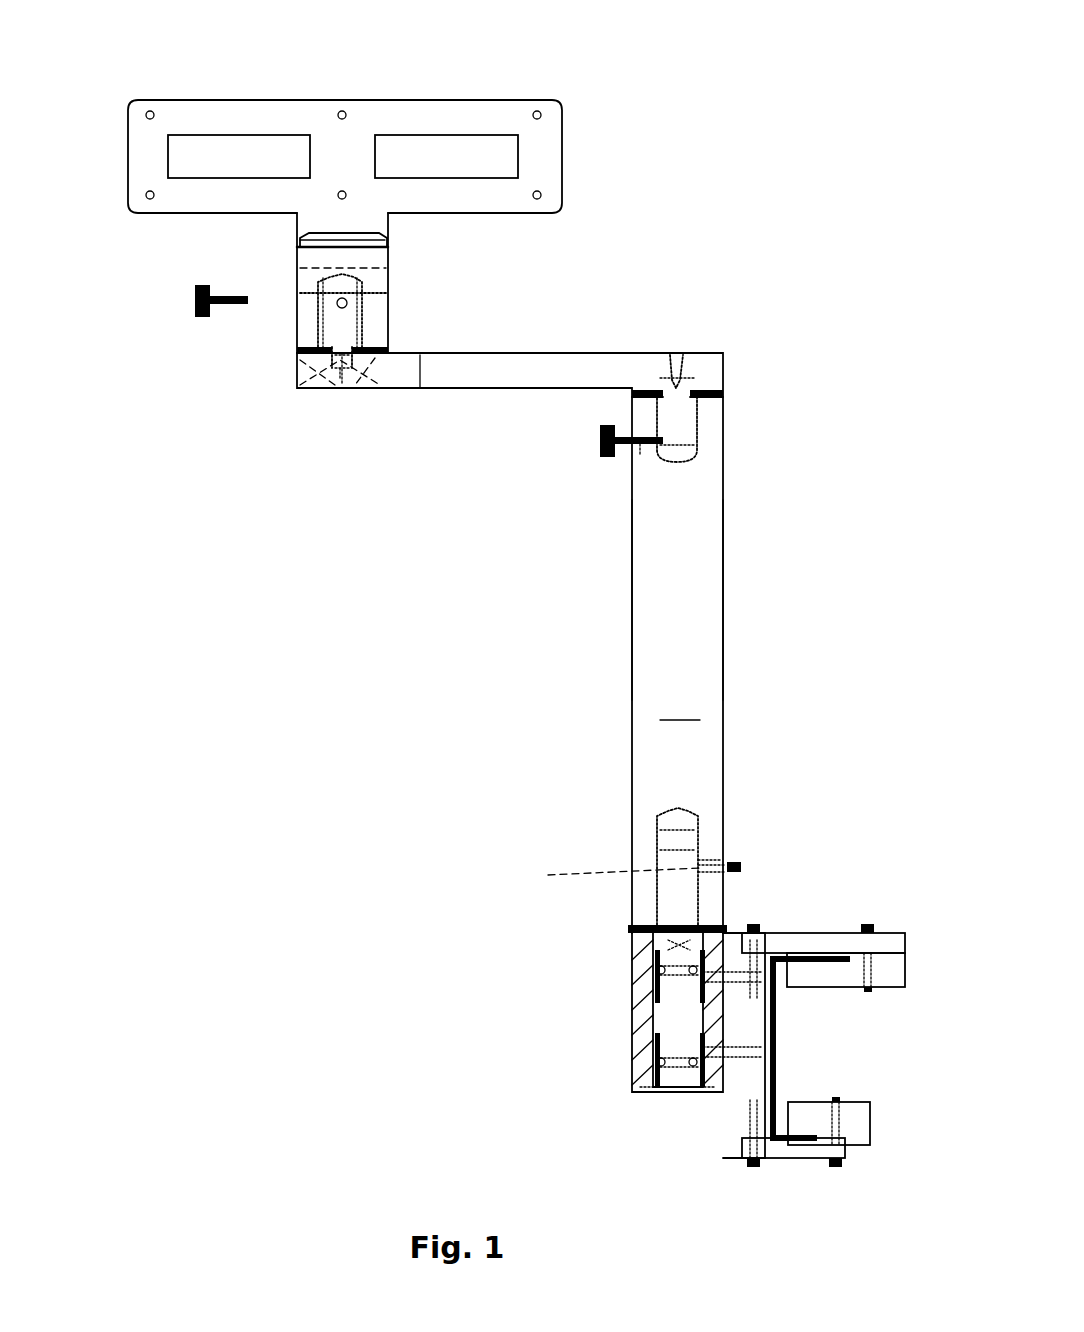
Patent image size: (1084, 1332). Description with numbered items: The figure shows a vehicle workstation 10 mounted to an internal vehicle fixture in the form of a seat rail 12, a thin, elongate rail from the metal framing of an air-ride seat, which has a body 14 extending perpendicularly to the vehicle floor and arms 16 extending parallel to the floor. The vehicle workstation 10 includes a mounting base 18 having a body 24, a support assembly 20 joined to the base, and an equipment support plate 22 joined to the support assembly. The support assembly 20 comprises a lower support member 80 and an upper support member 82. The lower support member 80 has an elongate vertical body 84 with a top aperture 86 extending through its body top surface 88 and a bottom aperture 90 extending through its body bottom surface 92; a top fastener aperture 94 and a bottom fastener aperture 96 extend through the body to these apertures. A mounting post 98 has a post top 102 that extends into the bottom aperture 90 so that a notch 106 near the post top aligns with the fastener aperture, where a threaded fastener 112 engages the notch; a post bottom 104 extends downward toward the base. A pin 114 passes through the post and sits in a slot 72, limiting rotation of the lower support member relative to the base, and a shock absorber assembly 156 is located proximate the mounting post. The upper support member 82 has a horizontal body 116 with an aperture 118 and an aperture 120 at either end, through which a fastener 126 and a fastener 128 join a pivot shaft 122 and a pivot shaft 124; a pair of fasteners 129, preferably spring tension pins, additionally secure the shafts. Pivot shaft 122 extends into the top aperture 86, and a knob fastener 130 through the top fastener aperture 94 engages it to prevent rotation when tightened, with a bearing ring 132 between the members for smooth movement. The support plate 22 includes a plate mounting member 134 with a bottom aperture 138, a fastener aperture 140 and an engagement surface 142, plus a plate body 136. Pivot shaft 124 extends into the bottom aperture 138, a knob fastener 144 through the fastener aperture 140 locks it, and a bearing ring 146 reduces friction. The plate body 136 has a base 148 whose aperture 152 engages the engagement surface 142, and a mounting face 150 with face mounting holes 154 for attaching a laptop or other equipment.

The vehicle workstation 10 is at (782, 86).
The seat rail 12 is at (778, 1030).
The body 14 is at (776, 1078).
The arms 16 is at (828, 950).
The mounting base 18 is at (631, 1057).
The support assembly 20 is at (632, 587).
The equipment support plate 22 is at (390, 257).
The body 24 is at (740, 1110).
The slot 72 is at (652, 950).
The lower support member 80 is at (722, 603).
The upper support member 82 is at (492, 355).
The body 84 is at (683, 720).
The top aperture 86 is at (700, 460).
The body top surface 88 is at (722, 400).
The bottom aperture 90 is at (700, 785).
The body bottom surface 92 is at (640, 925).
The top fastener aperture 94 is at (642, 450).
The bottom fastener aperture 96 is at (710, 850).
The mounting post 98 is at (657, 850).
The post top 102 is at (665, 812).
The post bottom 104 is at (685, 1090).
The notch 106 is at (615, 876).
The threaded fastener 112 is at (741, 867).
The pin 114 is at (680, 940).
The body 116 is at (502, 377).
The aperture 118 is at (682, 384).
The aperture 120 is at (315, 395).
The pivot shaft 122 is at (682, 432).
The pivot shaft 124 is at (345, 332).
The fastener 126 is at (675, 355).
The fastener 128 is at (340, 395).
The fasteners 129 is at (292, 375).
The knob fastener 130 is at (598, 440).
The bearing ring 132 is at (725, 392).
The plate mounting member 134 is at (305, 325).
The plate body 136 is at (303, 118).
The bottom aperture 138 is at (350, 278).
The fastener aperture 140 is at (300, 312).
The engagement surface 142 is at (325, 240).
The knob fastener 144 is at (192, 301).
The bearing ring 146 is at (300, 366).
The base 148 is at (342, 217).
The mounting face 150 is at (445, 115).
The aperture 152 is at (357, 240).
The face mounting holes 154 is at (150, 120).
The shock absorber assembly 156 is at (541, 1021).